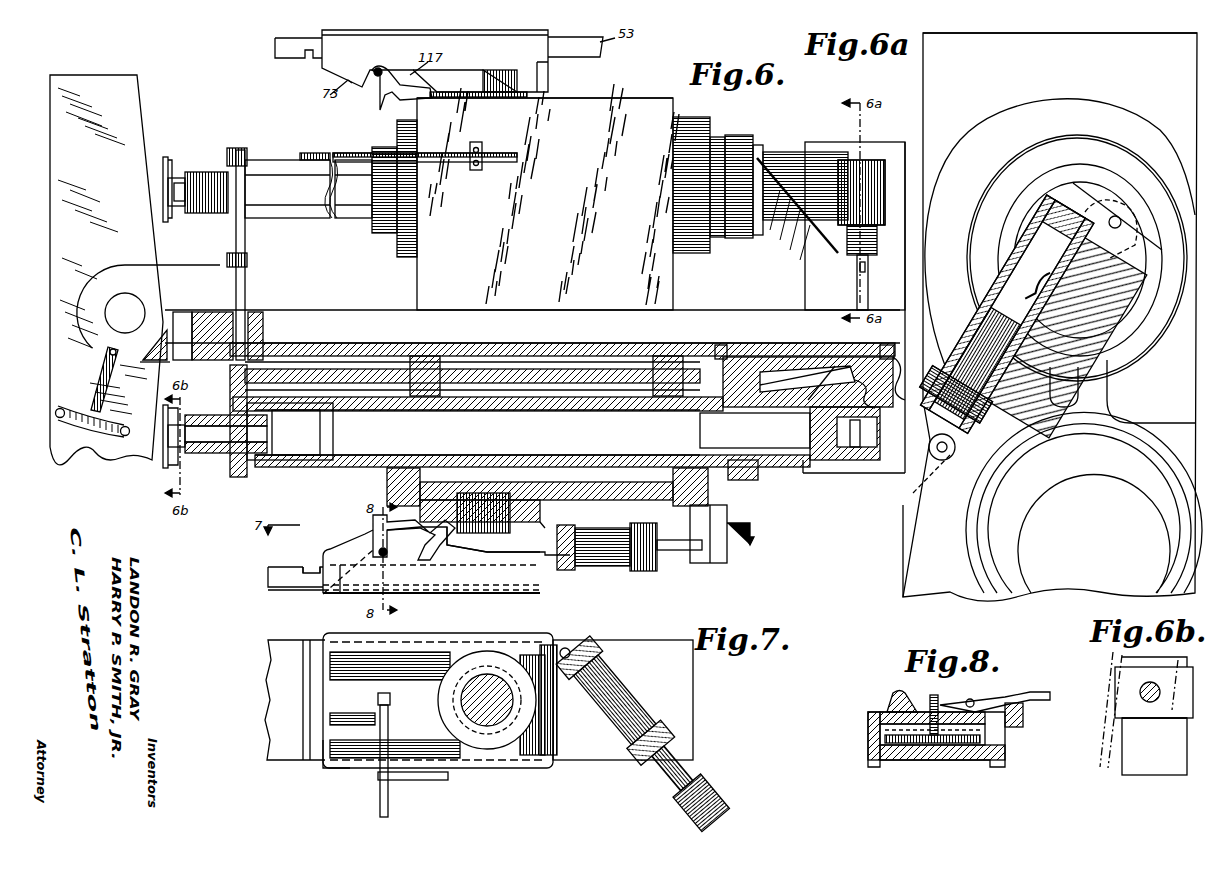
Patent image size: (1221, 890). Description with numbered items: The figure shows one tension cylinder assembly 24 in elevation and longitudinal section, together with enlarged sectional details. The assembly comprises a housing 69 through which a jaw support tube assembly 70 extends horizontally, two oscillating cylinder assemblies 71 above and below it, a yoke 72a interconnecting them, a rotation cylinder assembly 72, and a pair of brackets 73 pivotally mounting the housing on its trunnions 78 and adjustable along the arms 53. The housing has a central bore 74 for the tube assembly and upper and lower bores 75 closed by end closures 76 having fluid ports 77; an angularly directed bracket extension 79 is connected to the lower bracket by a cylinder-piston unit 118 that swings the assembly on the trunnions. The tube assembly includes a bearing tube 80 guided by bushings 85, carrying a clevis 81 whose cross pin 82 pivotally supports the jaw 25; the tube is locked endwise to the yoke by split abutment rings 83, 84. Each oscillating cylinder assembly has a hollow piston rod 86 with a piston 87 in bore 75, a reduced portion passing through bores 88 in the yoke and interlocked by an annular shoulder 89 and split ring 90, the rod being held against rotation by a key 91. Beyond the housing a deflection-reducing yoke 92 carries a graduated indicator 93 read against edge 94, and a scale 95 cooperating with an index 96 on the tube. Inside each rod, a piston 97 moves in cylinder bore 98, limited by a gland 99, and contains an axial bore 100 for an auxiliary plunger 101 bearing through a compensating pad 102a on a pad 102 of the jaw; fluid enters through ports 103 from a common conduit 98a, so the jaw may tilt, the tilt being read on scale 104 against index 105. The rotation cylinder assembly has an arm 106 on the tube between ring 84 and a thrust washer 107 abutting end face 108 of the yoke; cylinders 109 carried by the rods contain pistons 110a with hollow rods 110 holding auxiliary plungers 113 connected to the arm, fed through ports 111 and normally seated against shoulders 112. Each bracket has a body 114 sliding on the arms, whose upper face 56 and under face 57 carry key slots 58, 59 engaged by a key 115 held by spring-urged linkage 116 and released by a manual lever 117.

In FIG. 6, the tension cylinder assembly 24 is at (646, 95).
In FIG. 6A, the tension cylinder assembly 24 is at (923, 78).
In FIG. 6, the sheet-gripping jaw 25 is at (50, 218).
In FIG. 6B, the sheet-gripping jaw 25 is at (1135, 760).
In FIG. 6, the arm 53 is at (272, 582).
In FIG. 7, the arm 53 is at (268, 665).
In FIG. 8, the arm 53 is at (960, 767).
In FIG. 6, the upper face of lower arm 56 is at (278, 568).
In FIG. 6, the under face of upper arm 57 is at (560, 52).
In FIG. 6, the key slot 58 is at (312, 566).
In FIG. 7, the key slot 58 is at (303, 702).
In FIG. 8, the key slot 58 is at (905, 745).
In FIG. 6, the key slot 59 is at (303, 68).
In FIG. 6, the housing 69 is at (668, 115).
In FIG. 6A, the housing 69 is at (923, 128).
In FIG. 6, the jaw support tube assembly 70 is at (372, 230).
In FIG. 6, the oscillating cylinder assembly 71 is at (350, 397).
In FIG. 6, the rotation cylinder assembly 72 is at (808, 230).
In FIG. 6A, the rotation cylinder assembly 72 is at (1132, 345).
In FIG. 6, the yoke 72a is at (752, 135).
In FIG. 6A, the yoke 72a is at (1114, 135).
In FIG. 6, the bracket 73 is at (455, 598).
In FIG. 7, the bracket 73 is at (500, 768).
In FIG. 8, the bracket 73 is at (868, 740).
In FIG. 6, the central longitudinal bore 74 is at (478, 348).
In FIG. 6, the cylinder bore 75 is at (530, 456).
In FIG. 6, the end closure 76 is at (378, 398).
In FIG. 6, the pressure fluid port 77 is at (708, 493).
In FIG. 6, the trunnion 78 is at (483, 545).
In FIG. 7, the trunnion 78 is at (495, 680).
In FIG. 6, the bracket extension 79 is at (727, 560).
In FIG. 7, the bracket extension 79 is at (725, 808).
In FIG. 6, the bearing tube 80 is at (318, 357).
In FIG. 6A, the bearing tube 80 is at (1012, 580).
In FIG. 6, the clevis 81 is at (152, 263).
In FIG. 6, the cross pin 82 is at (124, 295).
In FIG. 6, the split abutment ring 83 is at (748, 350).
In FIG. 6, the split abutment ring 84 is at (890, 372).
In FIG. 6, the bushing 85 is at (676, 345).
In FIG. 6, the hollow piston rod 86 is at (340, 465).
In FIG. 6A, the hollow piston rod 86 is at (1058, 185).
In FIG. 6, the piston 87 is at (487, 455).
In FIG. 6, the bore 88 is at (762, 455).
In FIG. 6, the annular shoulder 89 is at (737, 455).
In FIG. 6, the split abutment ring 90 is at (758, 470).
In FIG. 6, the key 91 is at (768, 380).
In FIG. 6, the deflection-reducing yoke 92 is at (245, 242).
In FIG. 6, the graduated indicator 93 is at (437, 162).
In FIG. 6, the edge of housing 94 is at (415, 195).
In FIG. 6, the scale 95 is at (258, 312).
In FIG. 6, the index 96 is at (222, 313).
In FIG. 6, the piston 97 is at (222, 462).
In FIG. 6, the cylinder bore 98 is at (300, 462).
In FIG. 6, the common conduit 98a is at (862, 470).
In FIG. 6, the gland 99 is at (237, 400).
In FIG. 6, the axial cylinder bore 100 is at (208, 453).
In FIG. 6, the auxiliary plunger 101 is at (192, 425).
In FIG. 6B, the auxiliary plunger 101 is at (1140, 690).
In FIG. 6, the pad 102 is at (165, 427).
In FIG. 6B, the pad 102 is at (1125, 710).
In FIG. 6, the compensating pad 102a is at (165, 453).
In FIG. 6B, the compensating pad 102a is at (1150, 700).
In FIG. 6, the port 103 is at (803, 470).
In FIG. 6, the scale 104 is at (78, 412).
In FIG. 6, the index 105 is at (102, 374).
In FIG. 6, the laterally extending arm 106 is at (855, 300).
In FIG. 6A, the laterally extending arm 106 is at (903, 548).
In FIG. 6, the thrust washer 107 is at (863, 395).
In FIG. 6, the end face of yoke 108 is at (842, 375).
In FIG. 6, the cylinder 109 is at (840, 188).
In FIG. 6A, the cylinder 109 is at (990, 290).
In FIG. 6, the hollow piston rod 110 is at (845, 250).
In FIG. 6A, the hollow piston rod 110 is at (1010, 420).
In FIG. 6A, the piston 110a is at (1000, 270).
In FIG. 6A, the port 111 is at (1070, 285).
In FIG. 6A, the shoulder 112 is at (1000, 318).
In FIG. 6A, the auxiliary plunger 113 is at (950, 458).
In FIG. 6, the body 114 is at (428, 578).
In FIG. 7, the body 114 is at (326, 768).
In FIG. 6, the key 115 is at (345, 593).
In FIG. 7, the key 115 is at (378, 697).
In FIG. 8, the key 115 is at (932, 740).
In FIG. 7, the spring-urged linkage 116 is at (390, 733).
In FIG. 8, the spring-urged linkage 116 is at (1000, 695).
In FIG. 6, the manual lever 117 is at (373, 540).
In FIG. 7, the manual lever 117 is at (418, 780).
In FIG. 8, the manual lever 117 is at (1025, 715).
In FIG. 6, the cylinder-piston unit 118 is at (628, 568).
In FIG. 7, the cylinder-piston unit 118 is at (640, 712).